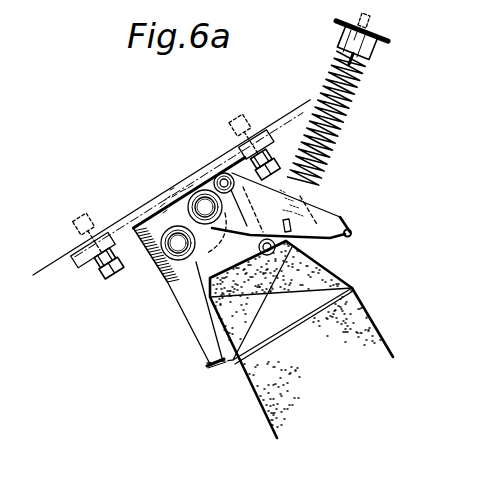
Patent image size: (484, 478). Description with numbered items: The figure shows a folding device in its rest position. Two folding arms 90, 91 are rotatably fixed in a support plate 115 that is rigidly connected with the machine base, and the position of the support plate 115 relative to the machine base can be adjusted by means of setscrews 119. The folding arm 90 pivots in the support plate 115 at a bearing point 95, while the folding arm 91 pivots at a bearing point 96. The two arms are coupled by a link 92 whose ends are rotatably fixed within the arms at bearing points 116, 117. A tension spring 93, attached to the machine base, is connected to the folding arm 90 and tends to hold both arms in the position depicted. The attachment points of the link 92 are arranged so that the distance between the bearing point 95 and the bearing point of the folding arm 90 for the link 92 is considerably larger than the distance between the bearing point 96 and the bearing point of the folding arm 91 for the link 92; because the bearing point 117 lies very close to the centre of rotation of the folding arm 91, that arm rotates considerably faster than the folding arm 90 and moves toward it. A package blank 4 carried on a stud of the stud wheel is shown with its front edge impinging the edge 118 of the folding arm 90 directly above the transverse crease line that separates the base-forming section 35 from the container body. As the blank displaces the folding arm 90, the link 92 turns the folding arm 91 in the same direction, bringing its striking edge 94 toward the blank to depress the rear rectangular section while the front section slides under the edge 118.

The package blank 4 is at (374, 334).
The base-forming section 35 is at (353, 289).
The folding arm 90 is at (207, 313).
The folding arm 91 is at (322, 222).
The link 92 is at (221, 151).
The tension spring 93 is at (340, 134).
The striking edge 94 is at (352, 234).
The bearing point 95 is at (174, 250).
The bearing point 96 is at (203, 206).
The support plate 115 is at (135, 215).
The bearing point 116 is at (313, 257).
The bearing point 117 is at (211, 180).
The edge 118 is at (220, 368).
The setscrews 119 is at (278, 134).